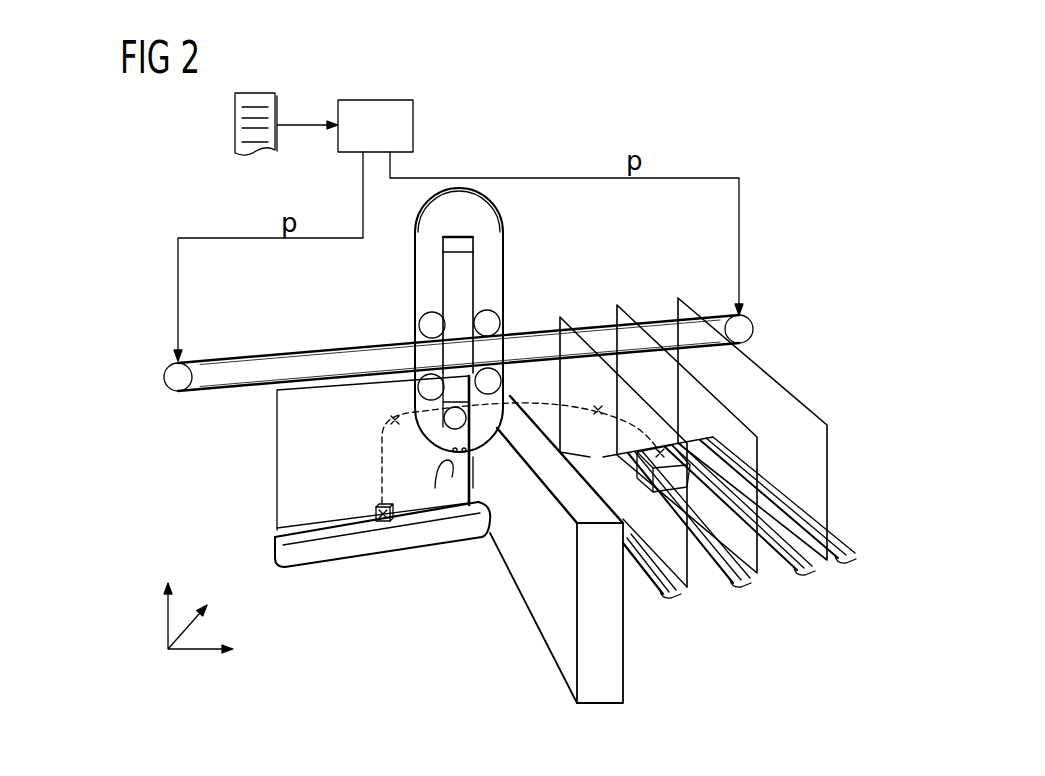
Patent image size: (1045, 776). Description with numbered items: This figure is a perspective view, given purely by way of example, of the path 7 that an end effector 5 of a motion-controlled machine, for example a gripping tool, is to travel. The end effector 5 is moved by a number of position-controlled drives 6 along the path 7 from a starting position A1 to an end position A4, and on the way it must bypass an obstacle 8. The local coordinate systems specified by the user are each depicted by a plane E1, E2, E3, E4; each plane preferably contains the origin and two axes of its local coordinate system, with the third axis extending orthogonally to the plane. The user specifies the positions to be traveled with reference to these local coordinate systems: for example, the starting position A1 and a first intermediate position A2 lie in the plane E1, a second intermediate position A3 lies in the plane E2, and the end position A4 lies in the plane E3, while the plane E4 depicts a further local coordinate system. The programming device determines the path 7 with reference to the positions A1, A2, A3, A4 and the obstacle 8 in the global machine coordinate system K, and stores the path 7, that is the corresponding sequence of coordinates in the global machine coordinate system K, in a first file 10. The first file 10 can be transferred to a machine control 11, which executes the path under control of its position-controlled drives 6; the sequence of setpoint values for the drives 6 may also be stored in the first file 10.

The first file 10 is at (235, 125).
The machine control 11 is at (413, 128).
The position-controlled drives 6 is at (164, 377).
The end effector 5 is at (437, 467).
The path 7 is at (380, 447).
The obstacle 8 is at (547, 618).
The plane E1 is at (277, 483).
The plane E2 is at (692, 557).
The plane E3 is at (778, 548).
The plane E4 is at (807, 403).
The starting position A1 is at (385, 523).
The first intermediate position A2 is at (395, 420).
The second intermediate position A3 is at (598, 410).
The end position A4 is at (662, 456).
The global machine coordinate system K is at (192, 583).